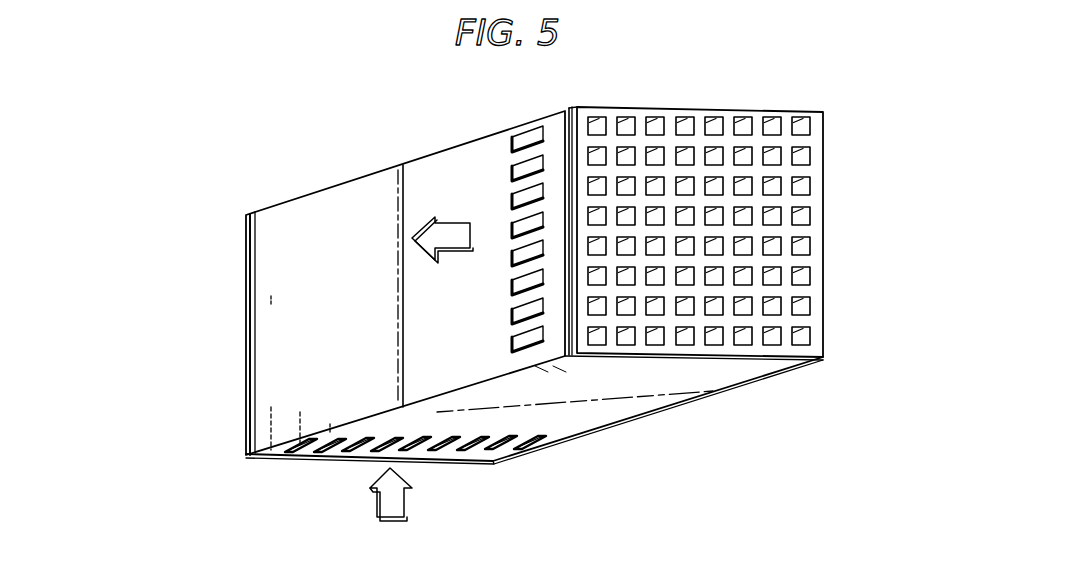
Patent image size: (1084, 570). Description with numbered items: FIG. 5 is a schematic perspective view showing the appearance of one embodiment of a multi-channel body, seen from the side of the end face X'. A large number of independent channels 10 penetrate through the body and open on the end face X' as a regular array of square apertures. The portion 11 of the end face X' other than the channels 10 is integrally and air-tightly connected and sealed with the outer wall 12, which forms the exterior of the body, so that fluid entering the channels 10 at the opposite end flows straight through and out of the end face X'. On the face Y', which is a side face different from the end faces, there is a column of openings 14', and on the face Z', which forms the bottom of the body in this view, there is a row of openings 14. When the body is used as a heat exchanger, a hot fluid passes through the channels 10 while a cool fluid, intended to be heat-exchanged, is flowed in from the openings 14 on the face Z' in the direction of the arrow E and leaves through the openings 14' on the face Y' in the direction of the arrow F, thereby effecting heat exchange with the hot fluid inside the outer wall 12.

The channels 10 is at (775, 158).
The portion other than the channels 11 is at (725, 128).
The outer wall 12 is at (343, 203).
The openings 14 is at (534, 430).
The openings 14' is at (500, 221).
The end face X' is at (629, 98).
The face Y' is at (405, 260).
The face Z' is at (575, 427).
The arrow E is at (395, 500).
The arrow F is at (450, 237).